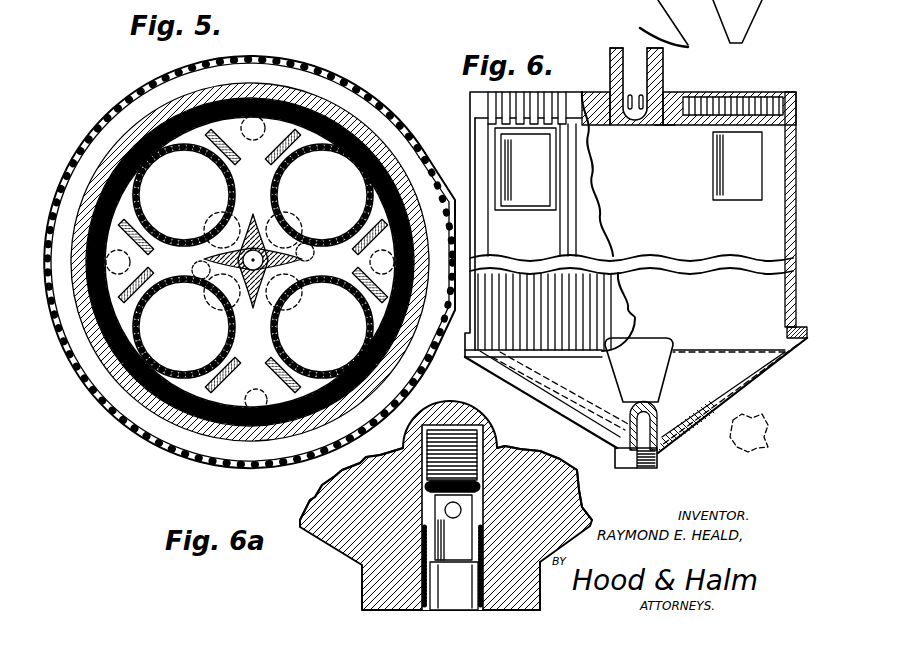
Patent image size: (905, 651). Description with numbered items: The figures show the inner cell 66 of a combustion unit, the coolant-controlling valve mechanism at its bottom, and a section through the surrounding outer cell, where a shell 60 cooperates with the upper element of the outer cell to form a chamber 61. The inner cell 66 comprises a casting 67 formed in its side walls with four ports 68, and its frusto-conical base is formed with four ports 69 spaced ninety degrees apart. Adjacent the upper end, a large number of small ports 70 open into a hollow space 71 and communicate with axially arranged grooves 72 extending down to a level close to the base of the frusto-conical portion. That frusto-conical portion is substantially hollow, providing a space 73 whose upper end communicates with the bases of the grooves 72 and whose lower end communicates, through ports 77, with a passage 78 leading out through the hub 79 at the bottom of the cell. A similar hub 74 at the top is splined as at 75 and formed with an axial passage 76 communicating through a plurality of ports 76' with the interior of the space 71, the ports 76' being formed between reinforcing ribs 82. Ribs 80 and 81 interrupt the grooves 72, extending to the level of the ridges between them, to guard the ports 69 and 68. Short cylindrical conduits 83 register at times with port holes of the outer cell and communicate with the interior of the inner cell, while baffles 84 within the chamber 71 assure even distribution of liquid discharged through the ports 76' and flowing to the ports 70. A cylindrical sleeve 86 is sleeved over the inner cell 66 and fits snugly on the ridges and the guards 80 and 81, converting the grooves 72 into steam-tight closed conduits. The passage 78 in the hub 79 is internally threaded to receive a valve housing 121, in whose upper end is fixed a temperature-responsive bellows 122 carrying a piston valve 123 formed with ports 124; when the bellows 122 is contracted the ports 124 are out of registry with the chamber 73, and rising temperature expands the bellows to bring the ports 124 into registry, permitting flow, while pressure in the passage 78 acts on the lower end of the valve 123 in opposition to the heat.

In FIG. 5, the shell 60 is at (93, 138).
In FIG. 5, the chamber 61 is at (152, 92).
In FIG. 6, the inner cell 66 is at (462, 111).
In FIG. 6A, the inner cell 66 is at (512, 452).
In FIG. 5, the casting 67 is at (188, 147).
In FIG. 6, the casting 67 is at (790, 303).
In FIG. 6A, the casting 67 is at (553, 463).
In FIG. 6, the ports 68 is at (735, 170).
In FIG. 6, the ports 69 is at (772, 358).
In FIG. 6, the small ports 70 is at (553, 102).
In FIG. 6, the hollow space 71 is at (590, 108).
In FIG. 5, the grooves 72 is at (452, 185).
In FIG. 6, the grooves 72 is at (793, 215).
In FIG. 6, the space 73 is at (750, 383).
In FIG. 6A, the space 73 is at (343, 493).
In FIG. 6, the hub 74 is at (665, 75).
In FIG. 6, the splines 75 is at (610, 52).
In FIG. 5, the axial passage 76 is at (253, 273).
In FIG. 6, the axial passage 76 is at (625, 37).
In FIG. 5, the ports 76' is at (253, 265).
In FIG. 6, the ports 76' is at (635, 88).
In FIG. 6, the ports 77 is at (662, 450).
In FIG. 6A, the ports 77 is at (418, 567).
In FIG. 6A, the passage 78 is at (417, 588).
In FIG. 6, the hub 79 is at (662, 468).
In FIG. 6A, the hub 79 is at (507, 597).
In FIG. 6, the rib 80 is at (790, 330).
In FIG. 6, the rib 81 is at (532, 130).
In FIG. 5, the reinforcing ribs 82 is at (302, 254).
In FIG. 6, the reinforcing ribs 82 is at (665, 125).
In FIG. 5, the short cylindrical conduits 83 is at (233, 193).
In FIG. 5, the baffles 84 is at (140, 292).
In FIG. 6, the baffles 84 is at (768, 103).
In FIG. 5, the cylindrical sleeve 86 is at (302, 90).
In FIG. 6A, the valve housing 121 is at (422, 452).
In FIG. 6A, the bellows 122 is at (448, 440).
In FIG. 6A, the piston valve 123 is at (422, 490).
In FIG. 6A, the ports 124 is at (483, 520).